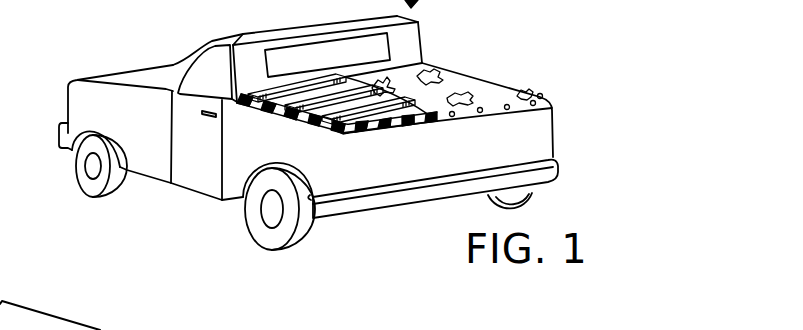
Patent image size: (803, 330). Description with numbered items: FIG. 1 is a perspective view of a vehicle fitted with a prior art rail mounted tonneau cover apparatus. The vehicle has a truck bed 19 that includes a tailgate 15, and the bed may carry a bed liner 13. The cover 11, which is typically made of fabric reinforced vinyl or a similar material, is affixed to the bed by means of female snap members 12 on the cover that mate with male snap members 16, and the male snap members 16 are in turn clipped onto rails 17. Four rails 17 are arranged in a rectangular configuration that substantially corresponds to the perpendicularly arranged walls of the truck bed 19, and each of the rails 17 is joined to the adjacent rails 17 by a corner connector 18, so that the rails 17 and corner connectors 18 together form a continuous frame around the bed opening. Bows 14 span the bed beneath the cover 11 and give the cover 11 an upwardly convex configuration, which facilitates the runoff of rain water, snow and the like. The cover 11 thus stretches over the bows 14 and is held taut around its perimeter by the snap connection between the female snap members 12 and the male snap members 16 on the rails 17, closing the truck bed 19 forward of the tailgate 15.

The cover 11 is at (473, 90).
The female snap members 12 is at (541, 95).
The bed liner 13 is at (314, 145).
The bows 14 is at (267, 119).
The tailgate 15 is at (533, 150).
The male snap members 16 is at (371, 128).
The rails 17 is at (357, 133).
The corner connector 18 is at (316, 132).
The truck bed 19 is at (576, 118).